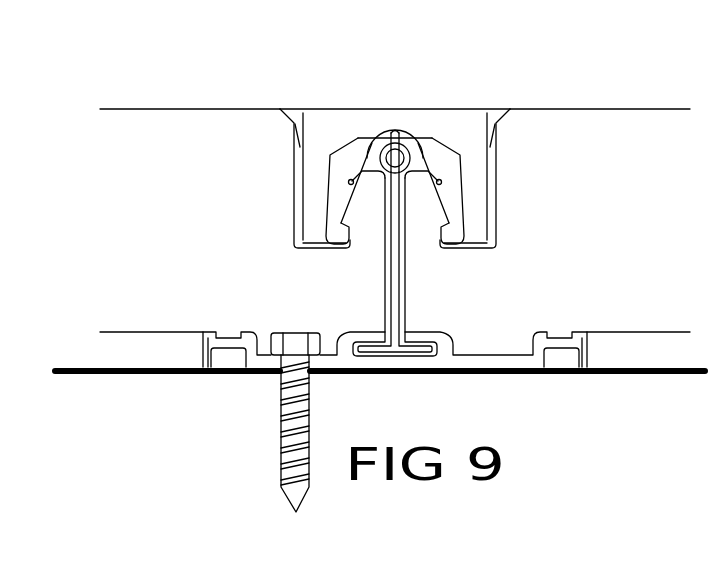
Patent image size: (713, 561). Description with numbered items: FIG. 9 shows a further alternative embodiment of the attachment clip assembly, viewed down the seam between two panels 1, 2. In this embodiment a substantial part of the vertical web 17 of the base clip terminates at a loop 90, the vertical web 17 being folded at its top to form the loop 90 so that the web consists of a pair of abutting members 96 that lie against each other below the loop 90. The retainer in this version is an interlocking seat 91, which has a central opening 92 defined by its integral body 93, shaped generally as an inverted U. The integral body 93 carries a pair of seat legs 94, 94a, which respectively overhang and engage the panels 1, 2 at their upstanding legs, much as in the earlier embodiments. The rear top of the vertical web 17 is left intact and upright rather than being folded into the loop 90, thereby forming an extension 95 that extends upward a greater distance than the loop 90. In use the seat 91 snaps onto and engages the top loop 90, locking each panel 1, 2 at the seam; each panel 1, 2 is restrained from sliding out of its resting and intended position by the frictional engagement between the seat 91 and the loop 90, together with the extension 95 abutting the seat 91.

The panel 1 is at (167, 125).
The panel 2 is at (557, 122).
The vertical web 17 is at (395, 264).
The loop 90 is at (420, 145).
The interlocking seat 91 is at (366, 152).
The central opening 92 is at (420, 150).
The integral body 93 is at (387, 149).
The seat leg 94 is at (350, 178).
The seat leg 94a is at (440, 178).
The extension 95 is at (396, 160).
The abutting members 96 is at (382, 255).